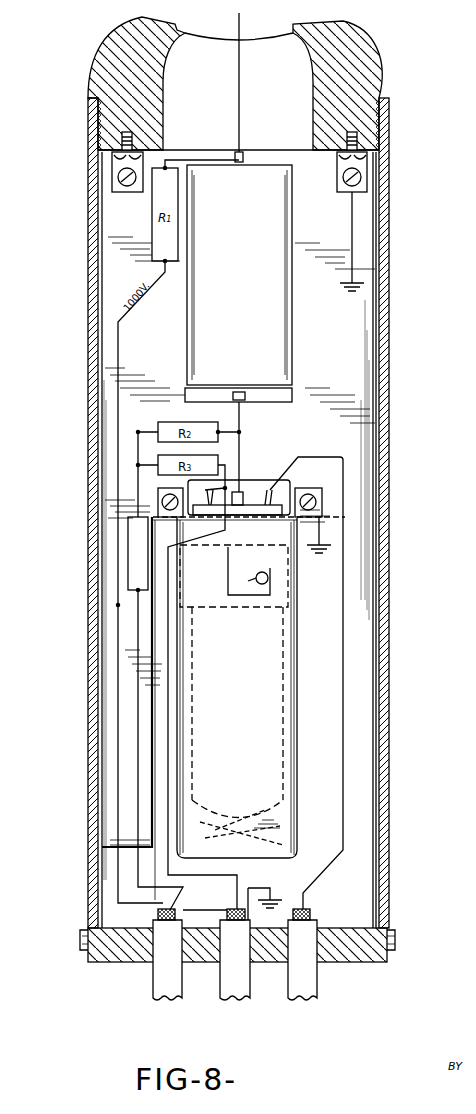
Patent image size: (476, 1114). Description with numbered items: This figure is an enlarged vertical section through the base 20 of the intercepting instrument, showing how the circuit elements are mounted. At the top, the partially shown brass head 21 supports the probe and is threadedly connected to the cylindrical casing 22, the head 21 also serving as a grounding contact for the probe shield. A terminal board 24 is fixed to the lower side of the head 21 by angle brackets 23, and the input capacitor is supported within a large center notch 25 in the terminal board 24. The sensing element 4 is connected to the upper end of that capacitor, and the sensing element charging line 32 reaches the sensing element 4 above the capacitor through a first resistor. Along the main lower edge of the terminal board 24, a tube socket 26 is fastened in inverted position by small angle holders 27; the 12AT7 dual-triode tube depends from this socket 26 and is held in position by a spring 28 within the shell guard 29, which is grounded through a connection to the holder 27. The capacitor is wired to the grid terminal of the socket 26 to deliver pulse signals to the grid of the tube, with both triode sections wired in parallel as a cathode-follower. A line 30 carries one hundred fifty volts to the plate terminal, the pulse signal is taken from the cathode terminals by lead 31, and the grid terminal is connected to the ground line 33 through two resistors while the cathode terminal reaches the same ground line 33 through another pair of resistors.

The sensing element 4 is at (240, 78).
The base 20 is at (383, 271).
The brass head 21 is at (380, 64).
The cylindrical casing 22 is at (388, 203).
The angle brackets 23 is at (117, 171).
The terminal board 24 is at (360, 343).
The center notch 25 is at (293, 395).
The tube socket 26 is at (270, 514).
The angle holders 27 is at (158, 498).
The spring 28 is at (267, 831).
The shell guard 29 is at (300, 656).
The line 30 is at (345, 758).
The lead 31 is at (177, 618).
The sensing element charging line 32 is at (118, 684).
The ground line 33 is at (140, 734).
The dual-triode tube 12AT7 is at (272, 712).